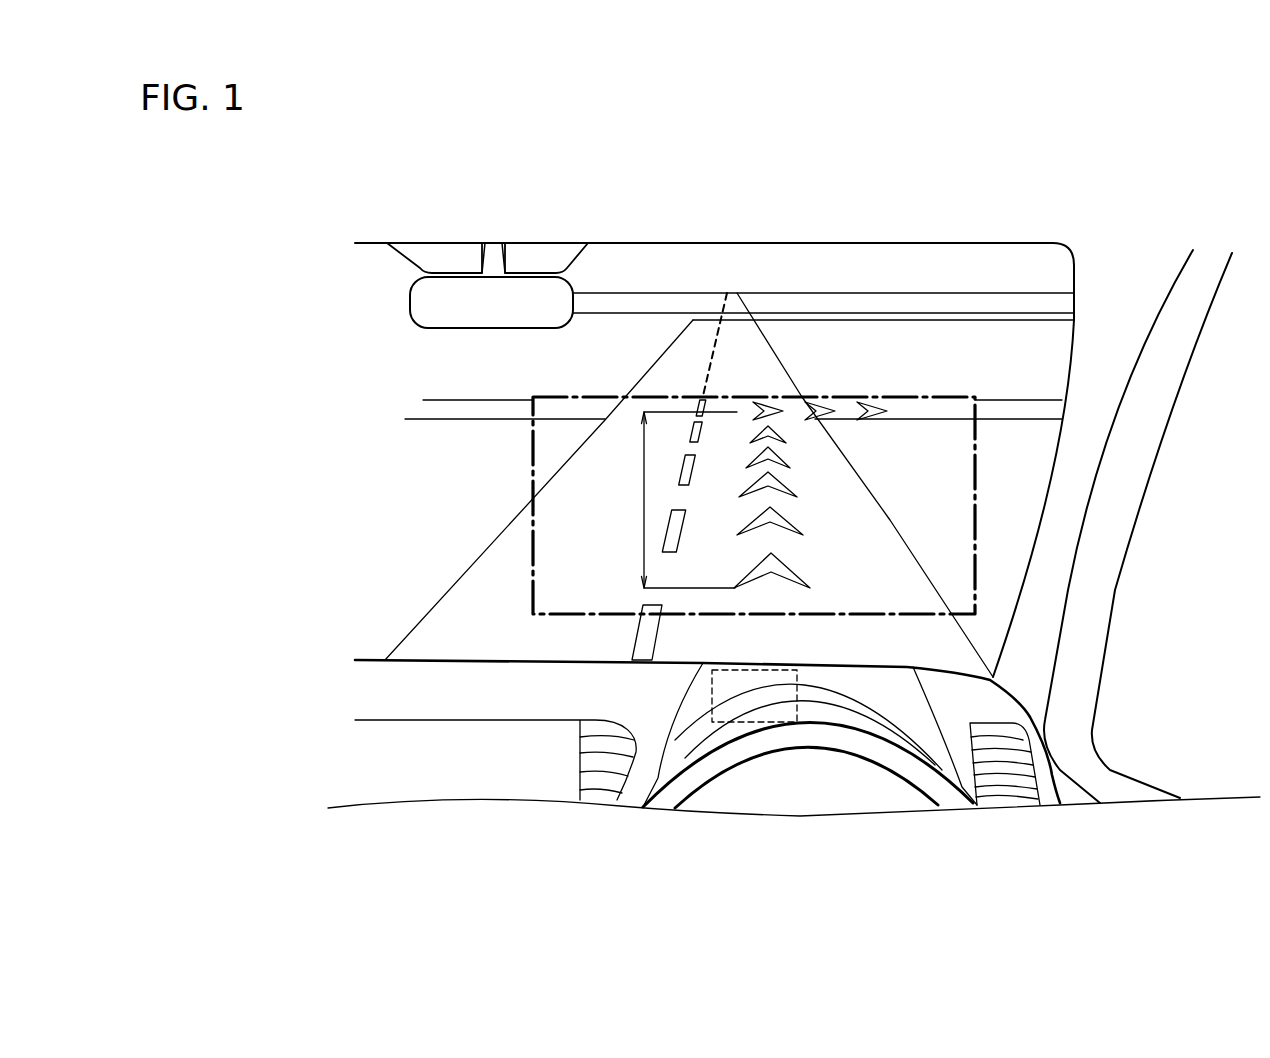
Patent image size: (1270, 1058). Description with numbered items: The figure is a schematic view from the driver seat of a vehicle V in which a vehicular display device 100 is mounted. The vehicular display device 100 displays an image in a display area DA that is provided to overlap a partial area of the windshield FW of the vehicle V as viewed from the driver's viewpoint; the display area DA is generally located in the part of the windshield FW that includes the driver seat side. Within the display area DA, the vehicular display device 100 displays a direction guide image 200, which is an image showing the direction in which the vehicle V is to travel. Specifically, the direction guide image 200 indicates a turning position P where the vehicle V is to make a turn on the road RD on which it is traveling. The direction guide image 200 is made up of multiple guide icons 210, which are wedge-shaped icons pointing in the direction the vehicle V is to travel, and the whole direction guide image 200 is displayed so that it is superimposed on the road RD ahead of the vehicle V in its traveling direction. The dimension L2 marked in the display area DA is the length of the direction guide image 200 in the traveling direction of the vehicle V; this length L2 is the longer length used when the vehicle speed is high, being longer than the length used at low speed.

The vehicular display device 100 is at (728, 722).
The direction guide image 200 is at (831, 539).
The guide icon 210 is at (797, 561).
The turning position P is at (770, 390).
The road RD is at (470, 557).
The windshield FW is at (933, 243).
The display area DA is at (976, 566).
The length of the direction guide image L2 is at (670, 500).
The vehicle V is at (1052, 815).